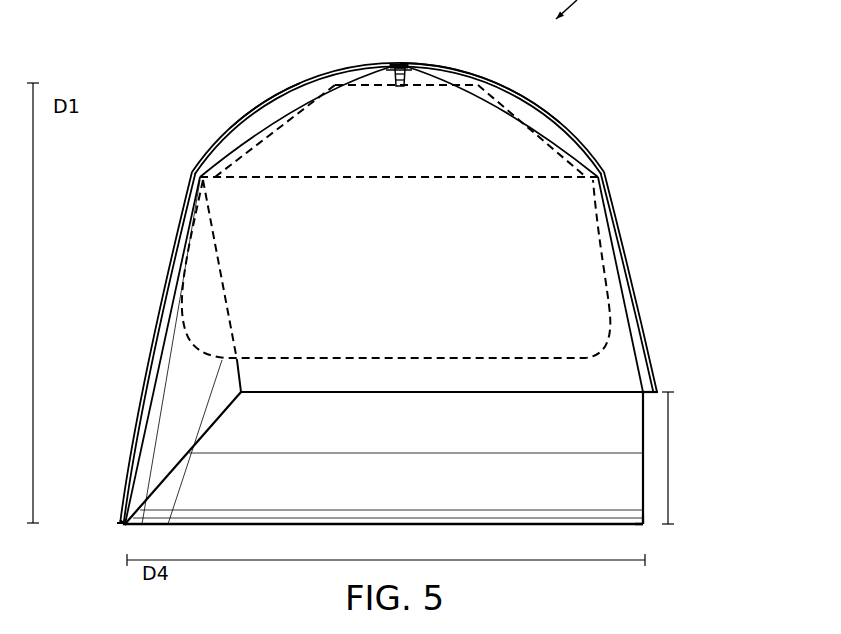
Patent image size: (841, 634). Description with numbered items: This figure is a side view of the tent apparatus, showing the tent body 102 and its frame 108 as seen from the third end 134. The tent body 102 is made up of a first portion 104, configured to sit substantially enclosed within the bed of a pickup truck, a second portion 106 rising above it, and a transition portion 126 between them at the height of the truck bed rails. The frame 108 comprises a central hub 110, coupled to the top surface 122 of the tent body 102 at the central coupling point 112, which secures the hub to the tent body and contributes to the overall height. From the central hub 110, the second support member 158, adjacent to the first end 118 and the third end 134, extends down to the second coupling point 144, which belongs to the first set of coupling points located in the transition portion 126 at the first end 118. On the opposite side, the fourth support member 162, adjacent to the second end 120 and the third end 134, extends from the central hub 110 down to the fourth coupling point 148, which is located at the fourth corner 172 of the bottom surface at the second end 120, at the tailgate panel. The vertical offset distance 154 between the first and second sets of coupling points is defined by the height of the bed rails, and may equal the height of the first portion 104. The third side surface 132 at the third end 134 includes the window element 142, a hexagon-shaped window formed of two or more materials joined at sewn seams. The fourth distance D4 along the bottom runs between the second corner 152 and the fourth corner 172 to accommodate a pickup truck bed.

The tent body 102 is at (567, 132).
The first portion 104 is at (600, 520).
The second portion 106 is at (622, 302).
The frame 108 is at (213, 147).
The central hub 110 is at (400, 63).
The central coupling point 112 is at (395, 75).
The first end 118 is at (645, 485).
The second end 120 is at (172, 472).
The top surface 122 is at (433, 78).
The transition portion 126 is at (630, 393).
The third side surface 132 is at (606, 383).
The third end 134 is at (268, 526).
The window element 142 is at (593, 225).
The second coupling point 144 is at (658, 392).
The fourth coupling point 148 is at (117, 523).
The second corner 152 is at (647, 527).
The vertical offset distance 154 is at (668, 432).
The second support member 158 is at (527, 97).
The fourth support member 162 is at (263, 108).
The fourth corner 172 is at (123, 525).